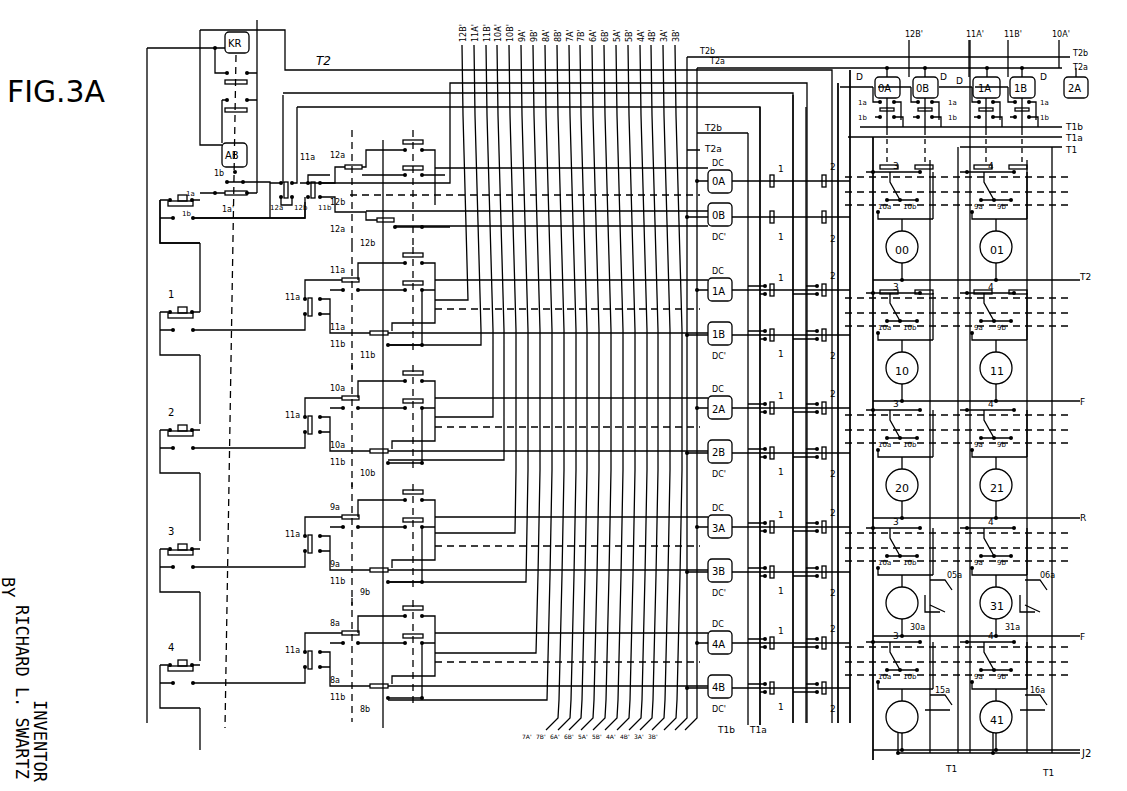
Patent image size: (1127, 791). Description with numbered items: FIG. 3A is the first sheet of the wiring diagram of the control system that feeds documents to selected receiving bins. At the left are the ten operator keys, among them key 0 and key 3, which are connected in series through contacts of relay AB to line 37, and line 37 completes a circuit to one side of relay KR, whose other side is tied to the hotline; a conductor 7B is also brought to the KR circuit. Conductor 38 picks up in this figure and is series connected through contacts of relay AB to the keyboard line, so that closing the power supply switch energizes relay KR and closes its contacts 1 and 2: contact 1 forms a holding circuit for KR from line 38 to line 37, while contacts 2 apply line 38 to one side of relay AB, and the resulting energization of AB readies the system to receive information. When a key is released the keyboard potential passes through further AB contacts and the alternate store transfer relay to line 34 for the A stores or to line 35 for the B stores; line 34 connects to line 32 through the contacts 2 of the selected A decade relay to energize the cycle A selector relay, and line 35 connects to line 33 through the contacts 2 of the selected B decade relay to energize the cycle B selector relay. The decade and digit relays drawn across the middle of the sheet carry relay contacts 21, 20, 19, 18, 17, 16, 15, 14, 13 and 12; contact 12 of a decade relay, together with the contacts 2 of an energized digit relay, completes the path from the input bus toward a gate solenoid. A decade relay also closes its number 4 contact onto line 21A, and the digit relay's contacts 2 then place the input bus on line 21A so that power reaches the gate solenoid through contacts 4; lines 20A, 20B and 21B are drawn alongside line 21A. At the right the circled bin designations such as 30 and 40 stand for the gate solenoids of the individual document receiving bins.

The line 37 is at (150, 736).
The conductor 38 is at (202, 395).
The supply lead 7B is at (265, 101).
The contact 1 is at (223, 81).
The contact 2 is at (239, 120).
The key 0 is at (232, 209).
The relay contact 21 is at (415, 166).
The relay contact 20 is at (403, 166).
The relay contact 19 is at (428, 255).
The relay contact 18 is at (428, 283).
The relay contact 17 is at (428, 373).
The relay contact 16 is at (428, 401).
The relay contact 15 is at (428, 492).
The relay contact 14 is at (428, 520).
The relay contact 13 is at (428, 608).
The contact 12 is at (428, 636).
The line 35 is at (787, 419).
The line 34 is at (806, 425).
The line 33 is at (830, 413).
The line 32 is at (847, 406).
The conductor 20A is at (875, 448).
The conductor 20B is at (930, 758).
The line 21A is at (980, 405).
The conductor 21B is at (1016, 465).
The key 3 is at (962, 221).
The contact 4 is at (962, 342).
The indicator lamp 30 is at (962, 577).
The indicator lamp 40 is at (962, 691).